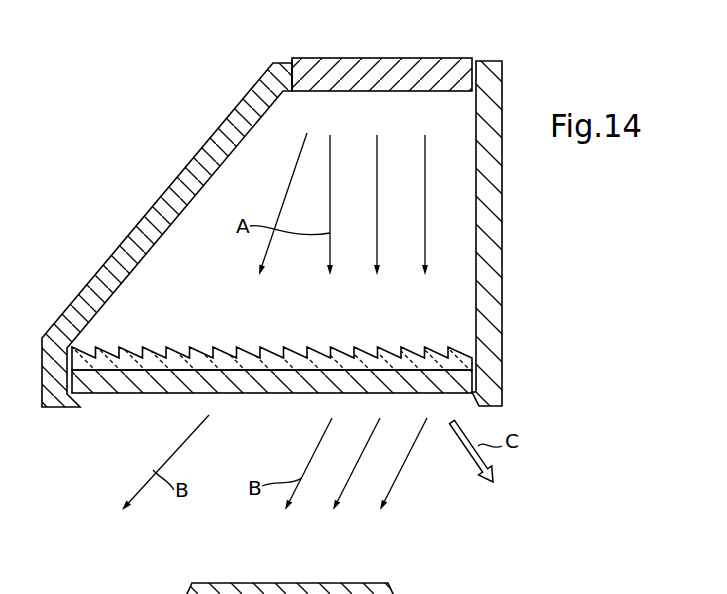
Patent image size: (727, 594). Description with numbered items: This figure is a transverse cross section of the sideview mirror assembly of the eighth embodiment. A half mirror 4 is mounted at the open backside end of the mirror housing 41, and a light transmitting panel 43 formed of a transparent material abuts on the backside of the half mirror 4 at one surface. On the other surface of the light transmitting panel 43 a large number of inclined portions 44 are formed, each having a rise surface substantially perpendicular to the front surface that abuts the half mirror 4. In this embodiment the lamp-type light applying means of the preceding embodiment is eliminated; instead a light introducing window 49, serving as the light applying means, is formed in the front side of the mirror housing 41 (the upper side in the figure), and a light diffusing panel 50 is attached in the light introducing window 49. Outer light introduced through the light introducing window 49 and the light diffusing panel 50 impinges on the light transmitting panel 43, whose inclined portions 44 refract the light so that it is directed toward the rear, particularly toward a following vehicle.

The half mirror 4 is at (313, 368).
The mirror housing 41 is at (506, 200).
The light transmitting panel 43 is at (444, 364).
The inclined portions 44 is at (405, 350).
The light introducing window 49 is at (293, 78).
The light diffusing panel 50 is at (401, 57).